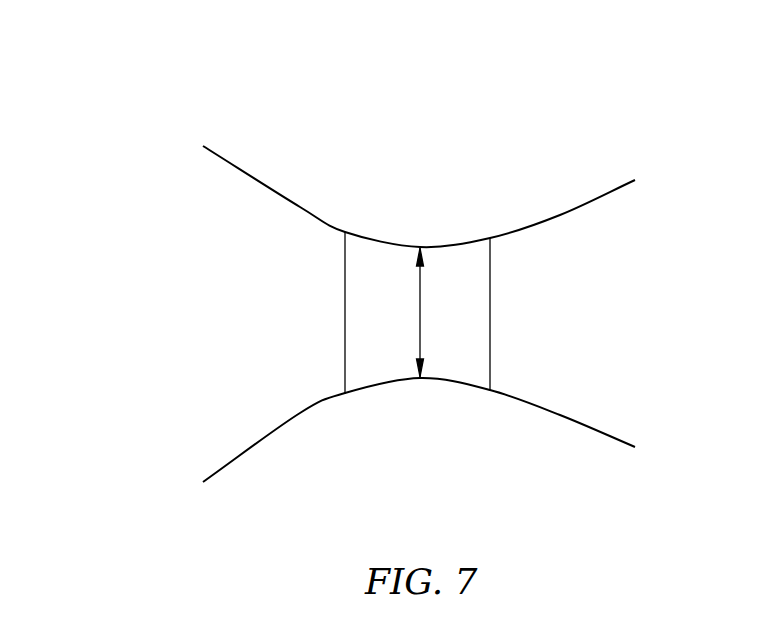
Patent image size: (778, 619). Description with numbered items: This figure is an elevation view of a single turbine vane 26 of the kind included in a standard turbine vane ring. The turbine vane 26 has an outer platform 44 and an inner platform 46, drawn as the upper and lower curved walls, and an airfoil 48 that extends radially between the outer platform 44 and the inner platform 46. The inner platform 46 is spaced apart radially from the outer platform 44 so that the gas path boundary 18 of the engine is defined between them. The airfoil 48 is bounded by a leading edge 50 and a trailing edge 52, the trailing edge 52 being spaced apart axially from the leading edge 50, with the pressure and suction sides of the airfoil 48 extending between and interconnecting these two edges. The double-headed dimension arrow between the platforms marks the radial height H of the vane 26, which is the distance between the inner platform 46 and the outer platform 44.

The turbine vane 26 is at (342, 263).
The gas path boundary 18 is at (203, 318).
The outer platform 44 is at (292, 187).
The inner platform 46 is at (308, 425).
The airfoil 48 is at (393, 313).
The leading edge 50 is at (344, 318).
The trailing edge 52 is at (492, 303).
The radial height H is at (420, 297).